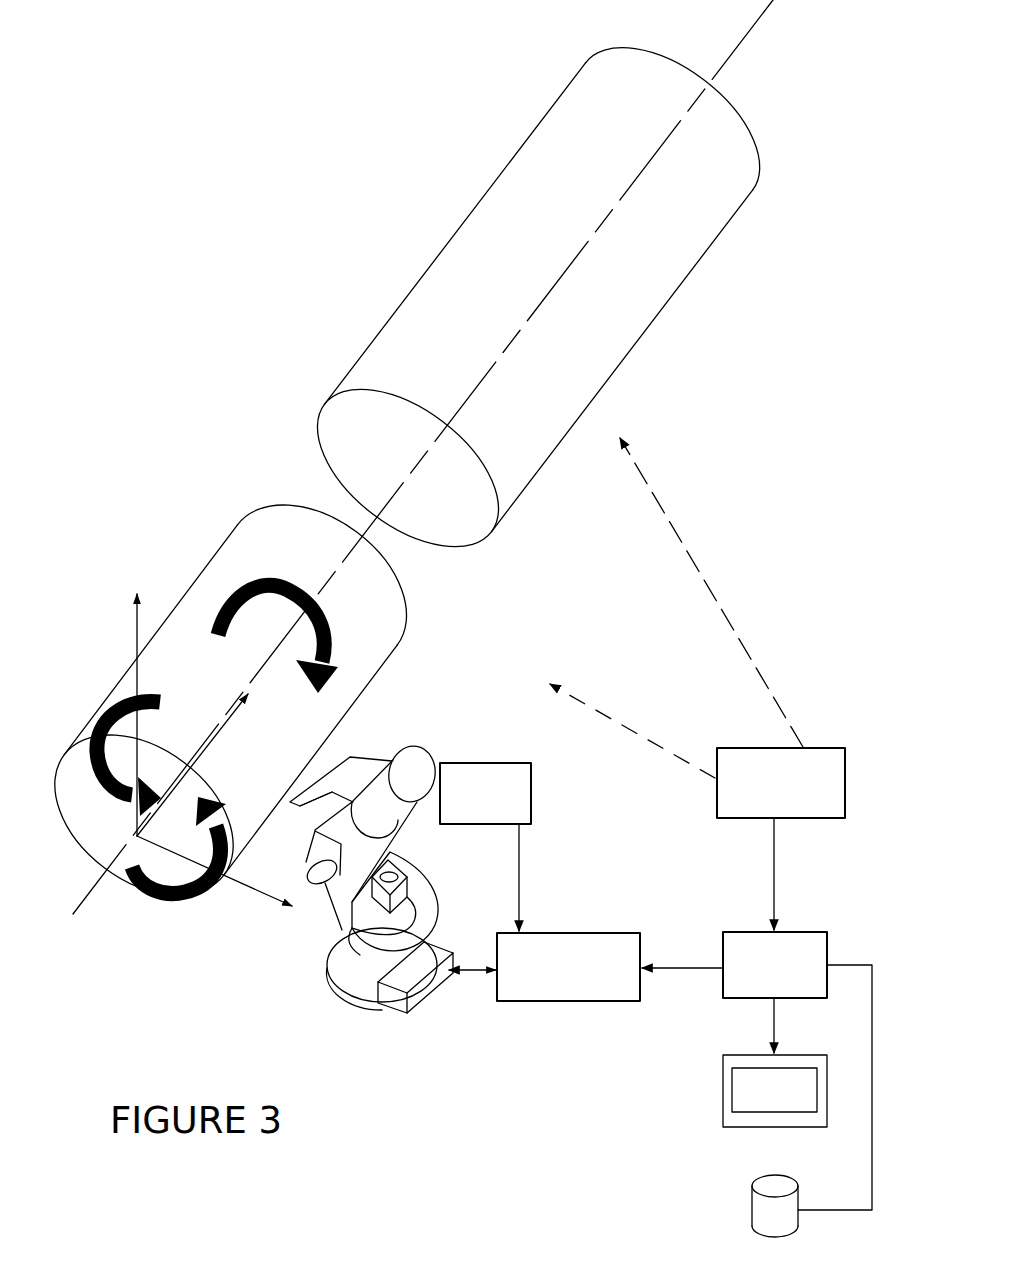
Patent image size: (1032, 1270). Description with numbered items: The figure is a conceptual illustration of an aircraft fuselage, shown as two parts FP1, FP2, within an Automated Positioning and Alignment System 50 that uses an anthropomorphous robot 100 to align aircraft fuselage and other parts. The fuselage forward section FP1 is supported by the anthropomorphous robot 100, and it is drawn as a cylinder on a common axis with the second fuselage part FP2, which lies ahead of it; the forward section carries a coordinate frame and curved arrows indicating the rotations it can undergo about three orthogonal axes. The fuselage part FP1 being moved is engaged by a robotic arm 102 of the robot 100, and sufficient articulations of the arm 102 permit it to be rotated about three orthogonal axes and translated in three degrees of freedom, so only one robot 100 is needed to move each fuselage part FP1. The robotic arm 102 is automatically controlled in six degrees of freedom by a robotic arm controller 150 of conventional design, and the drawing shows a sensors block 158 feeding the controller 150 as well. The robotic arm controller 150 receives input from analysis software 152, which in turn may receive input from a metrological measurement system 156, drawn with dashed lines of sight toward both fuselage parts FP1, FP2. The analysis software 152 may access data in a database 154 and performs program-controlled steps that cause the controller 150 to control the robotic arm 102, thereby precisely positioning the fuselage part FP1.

The automated positioning and alignment system 50 is at (255, 719).
The anthropomorphous robot 100 is at (313, 861).
The robotic arm 102 is at (357, 767).
The robotic arm controller 150 is at (584, 933).
The analysis software 152 is at (747, 932).
The database 154 is at (752, 1207).
The metrological measurement system 156 is at (830, 748).
The sensors 158 is at (473, 765).
The fuselage forward section FP1 is at (390, 665).
The fuselage part FP2 is at (557, 460).